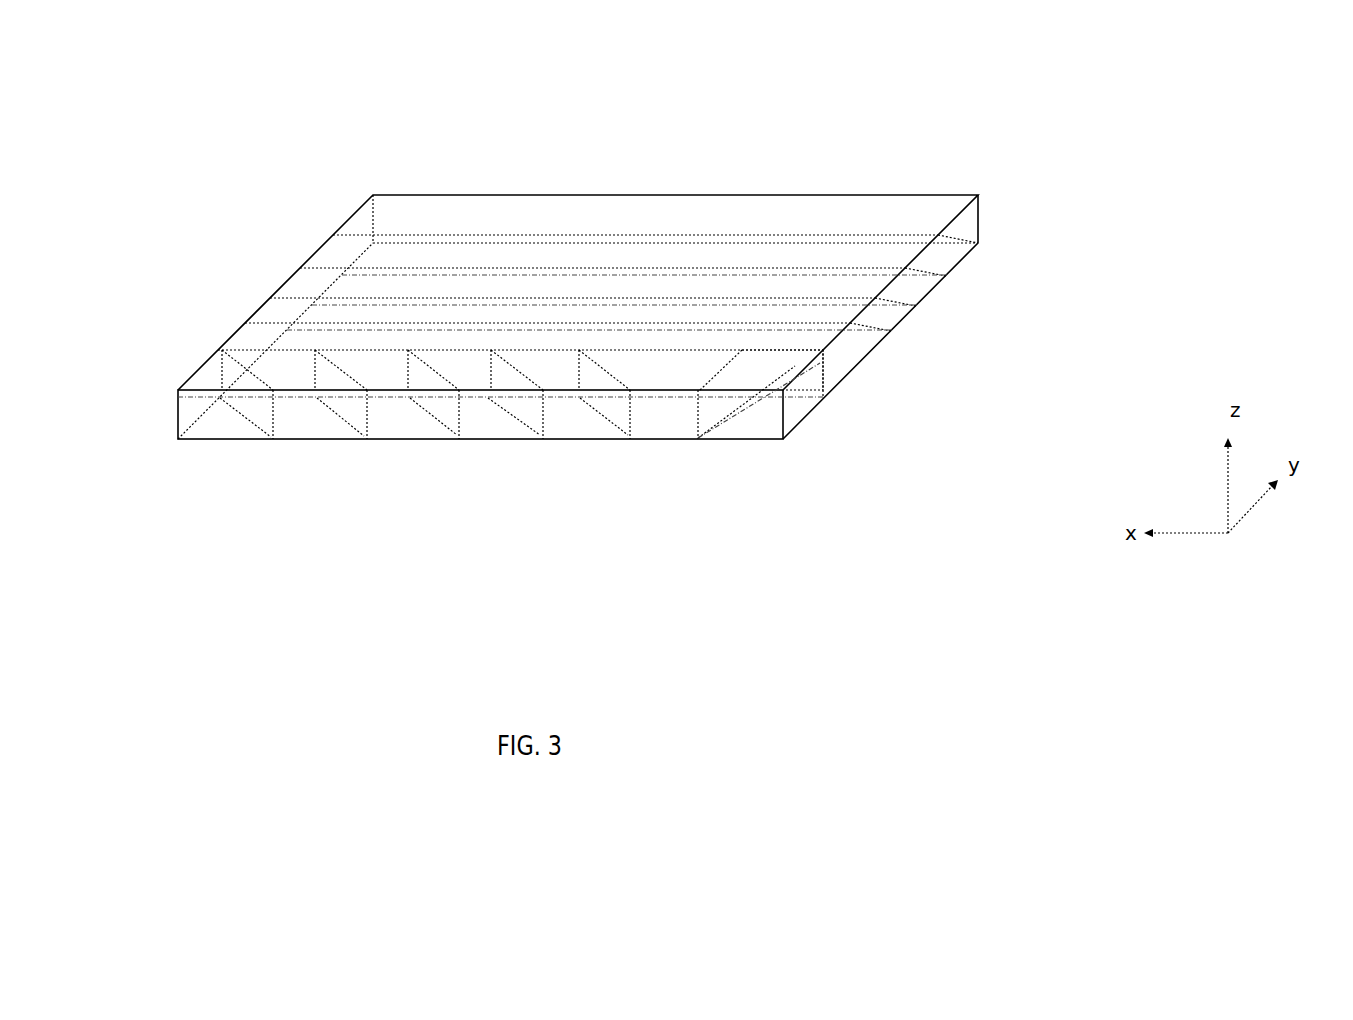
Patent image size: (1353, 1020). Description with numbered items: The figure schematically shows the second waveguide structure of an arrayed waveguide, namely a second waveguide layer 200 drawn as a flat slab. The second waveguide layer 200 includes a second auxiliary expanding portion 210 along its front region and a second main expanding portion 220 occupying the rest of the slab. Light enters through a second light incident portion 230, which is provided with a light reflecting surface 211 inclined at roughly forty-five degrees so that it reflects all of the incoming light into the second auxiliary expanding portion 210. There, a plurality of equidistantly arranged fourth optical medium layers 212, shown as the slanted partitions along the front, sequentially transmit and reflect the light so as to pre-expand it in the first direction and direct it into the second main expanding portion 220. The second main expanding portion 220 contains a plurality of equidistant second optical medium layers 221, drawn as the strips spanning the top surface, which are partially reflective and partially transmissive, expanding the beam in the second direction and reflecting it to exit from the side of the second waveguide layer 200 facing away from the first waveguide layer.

The second waveguide layer 200 is at (162, 144).
The second auxiliary expanding portion 210 is at (198, 342).
The light reflecting surface 211 is at (737, 418).
The fourth optical medium layers 212 is at (270, 420).
The second main expanding portion 220 is at (356, 188).
The second optical medium layers 221 is at (960, 242).
The second light incident portion 230 is at (768, 373).